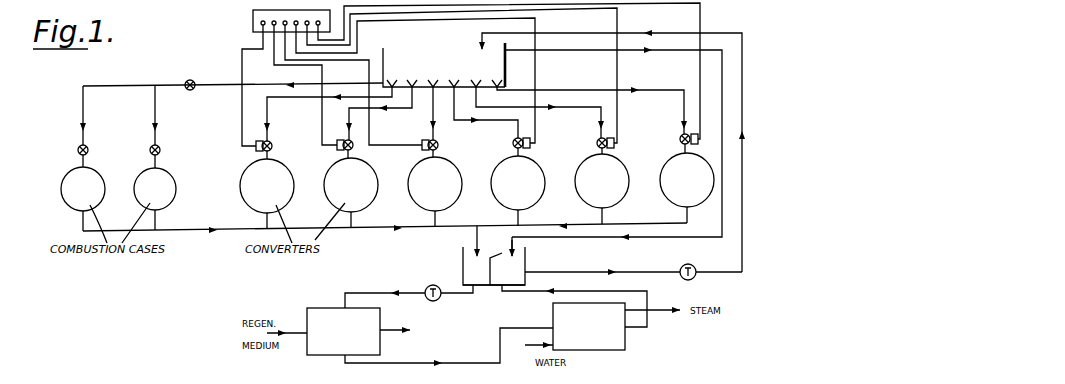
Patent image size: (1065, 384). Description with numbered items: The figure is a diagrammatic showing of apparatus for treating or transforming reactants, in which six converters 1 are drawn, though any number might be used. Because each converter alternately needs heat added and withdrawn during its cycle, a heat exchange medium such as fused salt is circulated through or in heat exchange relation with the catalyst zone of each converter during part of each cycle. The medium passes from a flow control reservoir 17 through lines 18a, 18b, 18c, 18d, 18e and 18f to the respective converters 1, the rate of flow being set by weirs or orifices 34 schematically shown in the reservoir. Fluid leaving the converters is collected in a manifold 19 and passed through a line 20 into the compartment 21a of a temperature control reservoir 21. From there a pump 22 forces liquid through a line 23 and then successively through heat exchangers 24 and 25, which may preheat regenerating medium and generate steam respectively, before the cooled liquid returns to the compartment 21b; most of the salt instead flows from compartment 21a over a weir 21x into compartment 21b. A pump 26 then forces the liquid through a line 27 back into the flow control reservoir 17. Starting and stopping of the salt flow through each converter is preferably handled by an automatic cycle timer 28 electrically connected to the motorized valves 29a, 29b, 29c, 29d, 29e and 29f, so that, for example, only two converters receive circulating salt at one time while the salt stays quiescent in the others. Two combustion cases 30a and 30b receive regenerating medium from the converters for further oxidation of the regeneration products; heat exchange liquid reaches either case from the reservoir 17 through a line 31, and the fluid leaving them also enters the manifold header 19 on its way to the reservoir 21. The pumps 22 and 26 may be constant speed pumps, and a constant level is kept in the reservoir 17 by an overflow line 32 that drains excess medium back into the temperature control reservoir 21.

The converter 1 is at (477, 191).
The flow control reservoir 17 is at (383, 57).
The line 18a is at (305, 100).
The line 18b is at (407, 110).
The line 18c is at (437, 127).
The line 18d is at (516, 120).
The line 18e is at (583, 108).
The line 18f is at (648, 89).
The manifold 19 is at (374, 229).
The line 20 is at (476, 242).
The temperature control reservoir 21 is at (463, 258).
The compartment 21a is at (485, 266).
The compartment 21b is at (524, 267).
The weir 21x is at (512, 251).
The pump 22 is at (440, 299).
The line 23 is at (373, 292).
The heat exchanger 24 is at (325, 358).
The heat exchanger 25 is at (622, 347).
The pump 26 is at (693, 279).
The line 27 is at (742, 248).
The automatic cycle timer 28 is at (253, 25).
The motorized valve 29a is at (273, 146).
The motorized valve 29b is at (341, 146).
The motorized valve 29c is at (439, 147).
The motorized valve 29d is at (531, 146).
The motorized valve 29e is at (615, 144).
The motorized valve 29f is at (681, 141).
The combustion case 30a is at (165, 170).
The combustion case 30b is at (93, 170).
The line 31 is at (227, 84).
The overflow line 32 is at (586, 56).
The weirs or orifices 34 is at (433, 86).